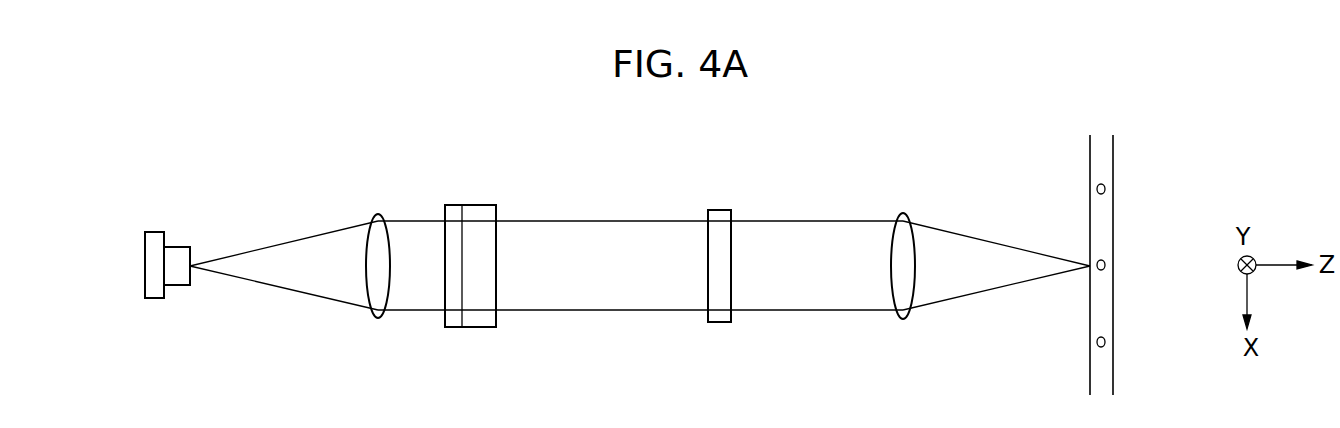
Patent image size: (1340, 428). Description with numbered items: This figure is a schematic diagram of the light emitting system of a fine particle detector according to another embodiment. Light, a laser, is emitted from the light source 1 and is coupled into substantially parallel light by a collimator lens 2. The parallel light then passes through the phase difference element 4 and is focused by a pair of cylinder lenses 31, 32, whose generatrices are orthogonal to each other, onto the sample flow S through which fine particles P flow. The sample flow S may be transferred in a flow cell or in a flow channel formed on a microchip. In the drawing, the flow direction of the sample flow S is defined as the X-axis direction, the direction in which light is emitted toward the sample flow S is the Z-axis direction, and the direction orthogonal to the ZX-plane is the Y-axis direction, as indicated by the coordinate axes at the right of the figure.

The light source 1 is at (152, 232).
The collimator lens 2 is at (378, 318).
The phase difference element 4 is at (477, 205).
The cylinder lens 31 is at (720, 210).
The cylinder lens 32 is at (904, 213).
The sample flow S is at (1090, 155).
The fine particles P is at (1100, 272).